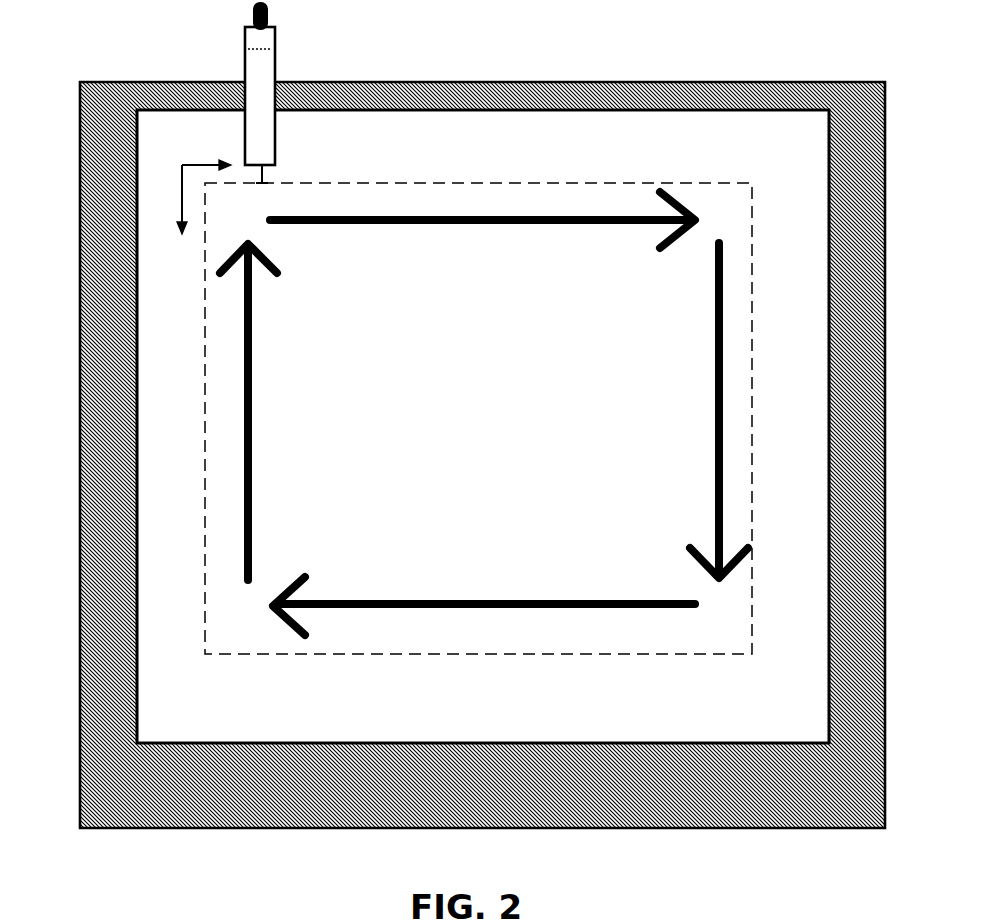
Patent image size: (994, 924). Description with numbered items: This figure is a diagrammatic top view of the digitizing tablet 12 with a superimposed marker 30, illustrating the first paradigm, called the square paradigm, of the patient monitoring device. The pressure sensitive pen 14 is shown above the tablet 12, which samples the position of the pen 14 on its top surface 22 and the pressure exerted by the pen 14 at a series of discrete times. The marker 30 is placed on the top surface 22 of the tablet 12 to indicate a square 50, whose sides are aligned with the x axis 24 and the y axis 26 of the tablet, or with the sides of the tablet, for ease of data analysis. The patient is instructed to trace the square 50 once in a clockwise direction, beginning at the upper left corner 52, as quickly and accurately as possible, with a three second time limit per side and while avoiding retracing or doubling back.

The digitizing tablet 12 is at (885, 792).
The pressure sensitive pen 14 is at (277, 46).
The top surface 22 is at (165, 556).
The x axis 24 is at (178, 224).
The y axis 26 is at (193, 161).
The marker 30 is at (812, 692).
The square 50 is at (755, 510).
The upper left corner 52 is at (205, 185).